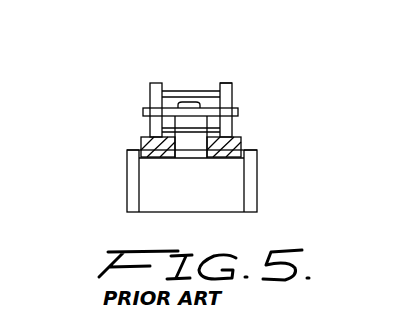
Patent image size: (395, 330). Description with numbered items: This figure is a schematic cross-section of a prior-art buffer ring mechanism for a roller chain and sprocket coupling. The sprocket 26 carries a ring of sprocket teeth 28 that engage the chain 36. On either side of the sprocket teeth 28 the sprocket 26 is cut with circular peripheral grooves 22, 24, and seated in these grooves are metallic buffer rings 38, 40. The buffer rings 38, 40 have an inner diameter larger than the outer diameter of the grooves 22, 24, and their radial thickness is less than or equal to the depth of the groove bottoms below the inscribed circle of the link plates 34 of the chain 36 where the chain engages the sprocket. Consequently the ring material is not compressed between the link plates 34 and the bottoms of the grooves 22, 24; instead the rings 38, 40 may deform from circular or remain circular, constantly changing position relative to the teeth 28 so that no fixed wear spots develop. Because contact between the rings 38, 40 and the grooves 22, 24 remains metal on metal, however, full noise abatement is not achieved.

The circular peripheral groove 22 is at (127, 155).
The circular peripheral groove 24 is at (257, 155).
The sprocket 26 is at (257, 190).
The sprocket teeth 28 is at (221, 161).
The link plates 34 is at (233, 95).
The chain 36 is at (228, 84).
The metallic buffer ring 38 is at (143, 137).
The metallic buffer ring 40 is at (238, 137).